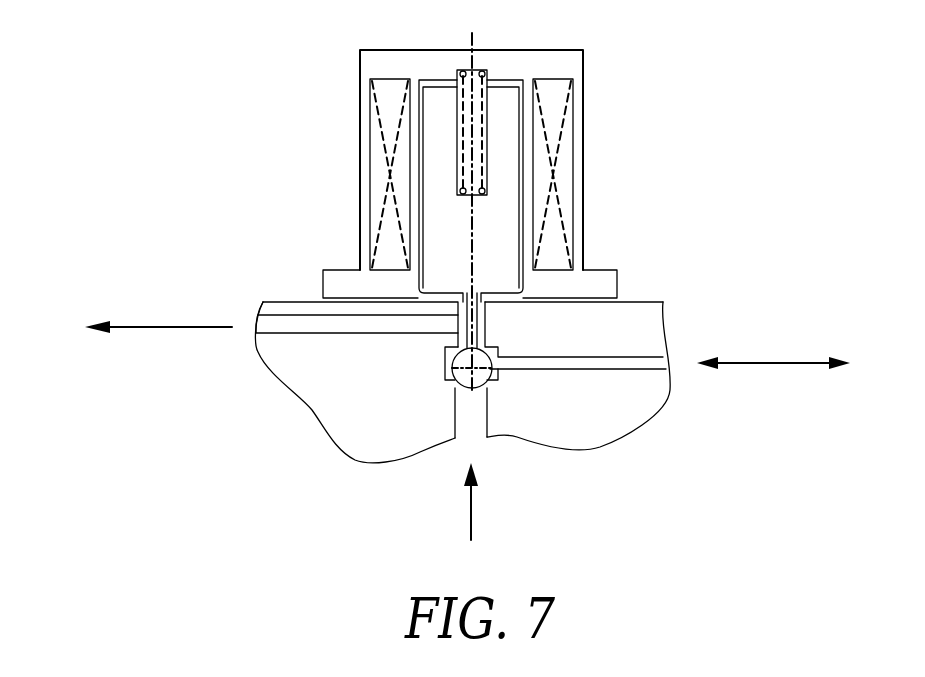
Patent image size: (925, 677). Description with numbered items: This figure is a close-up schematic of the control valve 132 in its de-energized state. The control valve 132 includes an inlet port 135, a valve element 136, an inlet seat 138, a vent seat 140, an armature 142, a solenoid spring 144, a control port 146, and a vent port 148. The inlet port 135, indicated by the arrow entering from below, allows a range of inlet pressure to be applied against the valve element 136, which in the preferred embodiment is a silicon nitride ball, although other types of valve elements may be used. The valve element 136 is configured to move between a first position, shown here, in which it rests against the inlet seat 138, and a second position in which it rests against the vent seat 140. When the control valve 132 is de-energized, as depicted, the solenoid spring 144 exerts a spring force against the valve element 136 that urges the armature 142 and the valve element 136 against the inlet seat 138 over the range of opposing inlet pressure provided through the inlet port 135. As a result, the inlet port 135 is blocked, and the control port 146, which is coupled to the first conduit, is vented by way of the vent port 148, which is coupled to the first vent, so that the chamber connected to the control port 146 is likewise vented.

The control valve 132 is at (92, 58).
The inlet port 135 is at (474, 503).
The valve element 136 is at (498, 377).
The inlet seat 138 is at (457, 386).
The vent seat 140 is at (486, 345).
The armature 142 is at (419, 168).
The solenoid spring 144 is at (480, 70).
The control port 146 is at (774, 362).
The vent port 148 is at (158, 326).